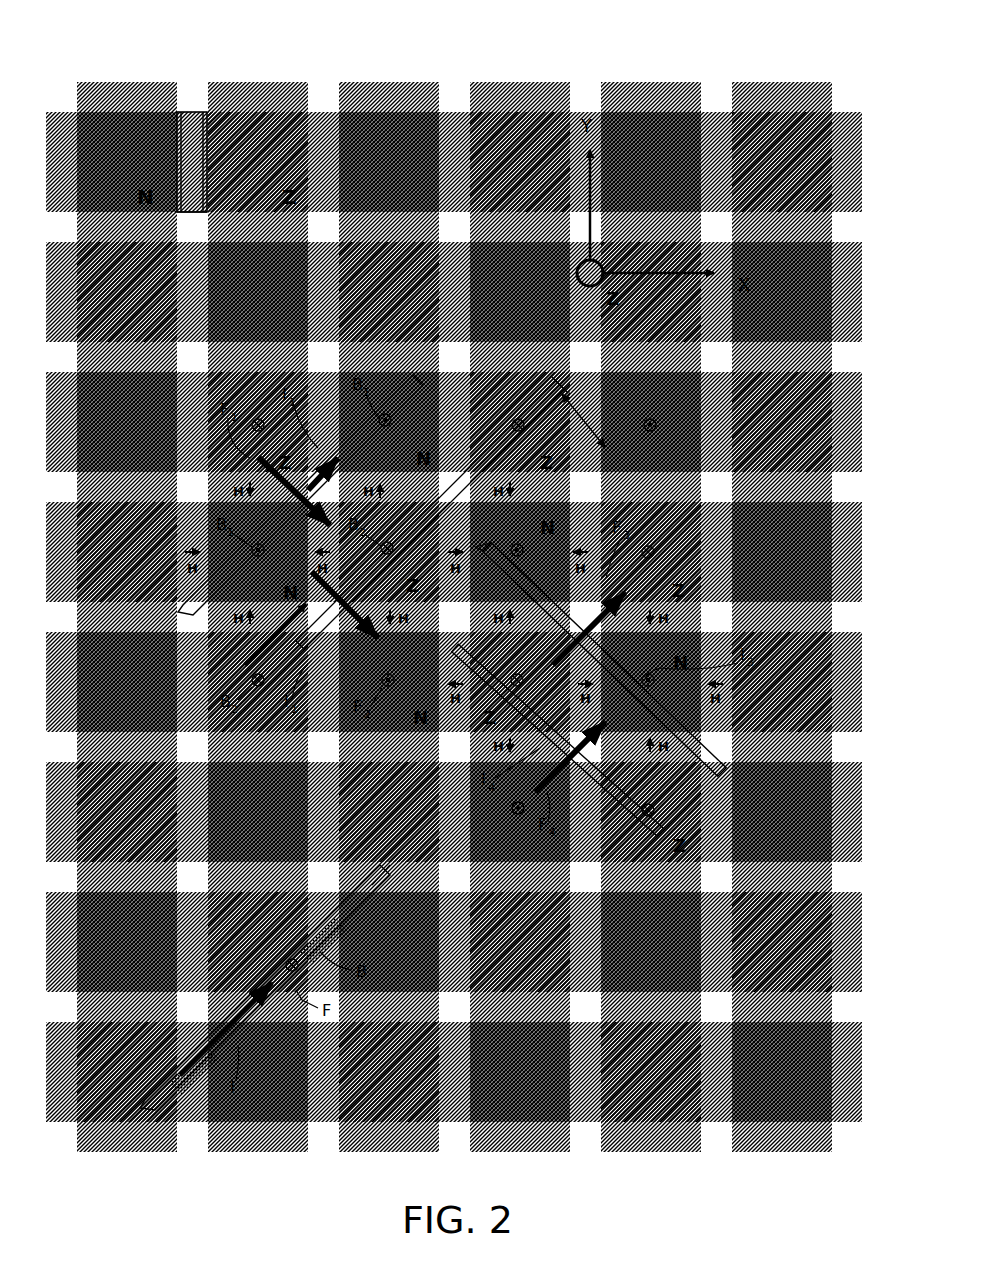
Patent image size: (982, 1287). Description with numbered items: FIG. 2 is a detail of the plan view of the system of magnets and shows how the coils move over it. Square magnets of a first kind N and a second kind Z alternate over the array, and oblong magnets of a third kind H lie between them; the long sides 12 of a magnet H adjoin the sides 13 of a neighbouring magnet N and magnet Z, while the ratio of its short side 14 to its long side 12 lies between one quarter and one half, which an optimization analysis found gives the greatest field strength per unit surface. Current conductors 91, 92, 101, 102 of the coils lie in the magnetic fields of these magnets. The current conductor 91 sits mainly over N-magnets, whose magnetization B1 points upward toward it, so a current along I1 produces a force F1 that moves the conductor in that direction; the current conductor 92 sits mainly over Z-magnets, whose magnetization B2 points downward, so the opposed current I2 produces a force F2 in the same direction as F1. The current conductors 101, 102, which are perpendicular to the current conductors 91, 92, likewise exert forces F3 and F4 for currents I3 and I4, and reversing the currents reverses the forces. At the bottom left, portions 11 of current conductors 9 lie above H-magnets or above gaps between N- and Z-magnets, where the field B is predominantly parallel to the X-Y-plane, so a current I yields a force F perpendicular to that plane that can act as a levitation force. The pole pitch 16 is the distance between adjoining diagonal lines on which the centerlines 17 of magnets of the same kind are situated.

The current conductor 9 is at (368, 887).
The current conductor 91 is at (385, 388).
The current conductor 92 is at (488, 456).
The current conductor 101 is at (725, 770).
The current conductor 102 is at (660, 834).
The portions of current conductors 11 is at (283, 958).
The long side 12 is at (192, 212).
The side 13 is at (181, 163).
The short side 14 is at (194, 112).
The pole pitch 16 is at (588, 405).
The centerline 17 is at (655, 432).